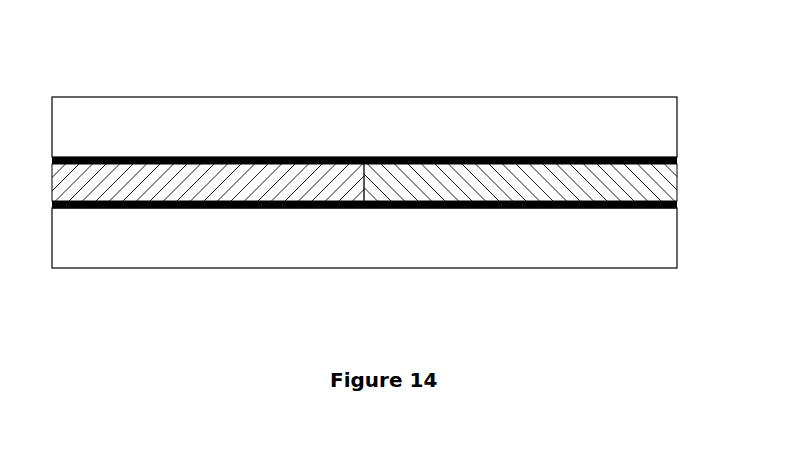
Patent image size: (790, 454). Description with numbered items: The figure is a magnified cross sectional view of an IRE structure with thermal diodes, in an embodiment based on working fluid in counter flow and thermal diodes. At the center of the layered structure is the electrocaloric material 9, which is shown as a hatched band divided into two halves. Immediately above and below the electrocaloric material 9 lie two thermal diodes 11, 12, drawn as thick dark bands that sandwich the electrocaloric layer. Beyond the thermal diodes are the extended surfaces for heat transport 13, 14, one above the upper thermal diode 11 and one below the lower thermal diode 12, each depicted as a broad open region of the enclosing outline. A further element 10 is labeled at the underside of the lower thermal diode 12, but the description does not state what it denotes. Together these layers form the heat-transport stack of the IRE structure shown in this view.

The electrocaloric material 9 is at (287, 185).
The lower outer surface 10 is at (503, 208).
The thermal diode 11 is at (168, 157).
The thermal diode 12 is at (330, 208).
The extended surface for heat transport 13 is at (564, 127).
The extended surface for heat transport 14 is at (194, 246).